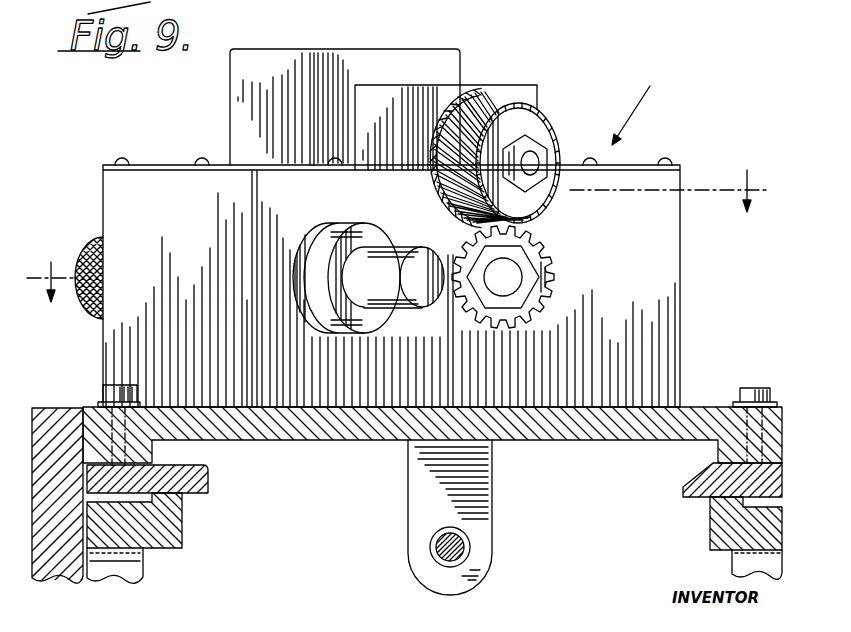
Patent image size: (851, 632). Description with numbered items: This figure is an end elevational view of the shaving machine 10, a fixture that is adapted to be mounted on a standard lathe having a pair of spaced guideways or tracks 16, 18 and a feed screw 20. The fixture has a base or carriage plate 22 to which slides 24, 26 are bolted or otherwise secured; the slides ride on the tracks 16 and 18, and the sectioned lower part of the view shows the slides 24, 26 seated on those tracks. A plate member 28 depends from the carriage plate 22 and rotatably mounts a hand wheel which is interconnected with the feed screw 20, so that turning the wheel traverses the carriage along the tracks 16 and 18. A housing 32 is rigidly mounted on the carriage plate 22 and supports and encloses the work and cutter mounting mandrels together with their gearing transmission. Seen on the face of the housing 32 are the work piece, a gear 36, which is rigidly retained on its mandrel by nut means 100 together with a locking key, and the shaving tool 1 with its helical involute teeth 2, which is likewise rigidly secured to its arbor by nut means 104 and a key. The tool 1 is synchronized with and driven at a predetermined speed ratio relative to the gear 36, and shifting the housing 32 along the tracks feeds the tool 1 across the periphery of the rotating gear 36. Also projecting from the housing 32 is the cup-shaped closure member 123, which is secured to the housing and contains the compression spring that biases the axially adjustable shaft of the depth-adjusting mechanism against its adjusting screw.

The shaving tool 1 is at (547, 114).
The helical involute teeth 2 is at (545, 192).
The shaving machine 10 is at (750, 169).
The guideway or track 16 is at (183, 517).
The guideway or track 18 is at (672, 528).
The feed screw 20 is at (444, 563).
The carriage plate 22 is at (698, 418).
The slide 24 is at (200, 480).
The slide 26 is at (707, 484).
The plate member 28 is at (58, 412).
The housing 32 is at (685, 278).
The gear 36 is at (552, 267).
The nut means 100 is at (522, 263).
The nut means 104 is at (597, 114).
The cup-shaped closure member 123 is at (397, 246).